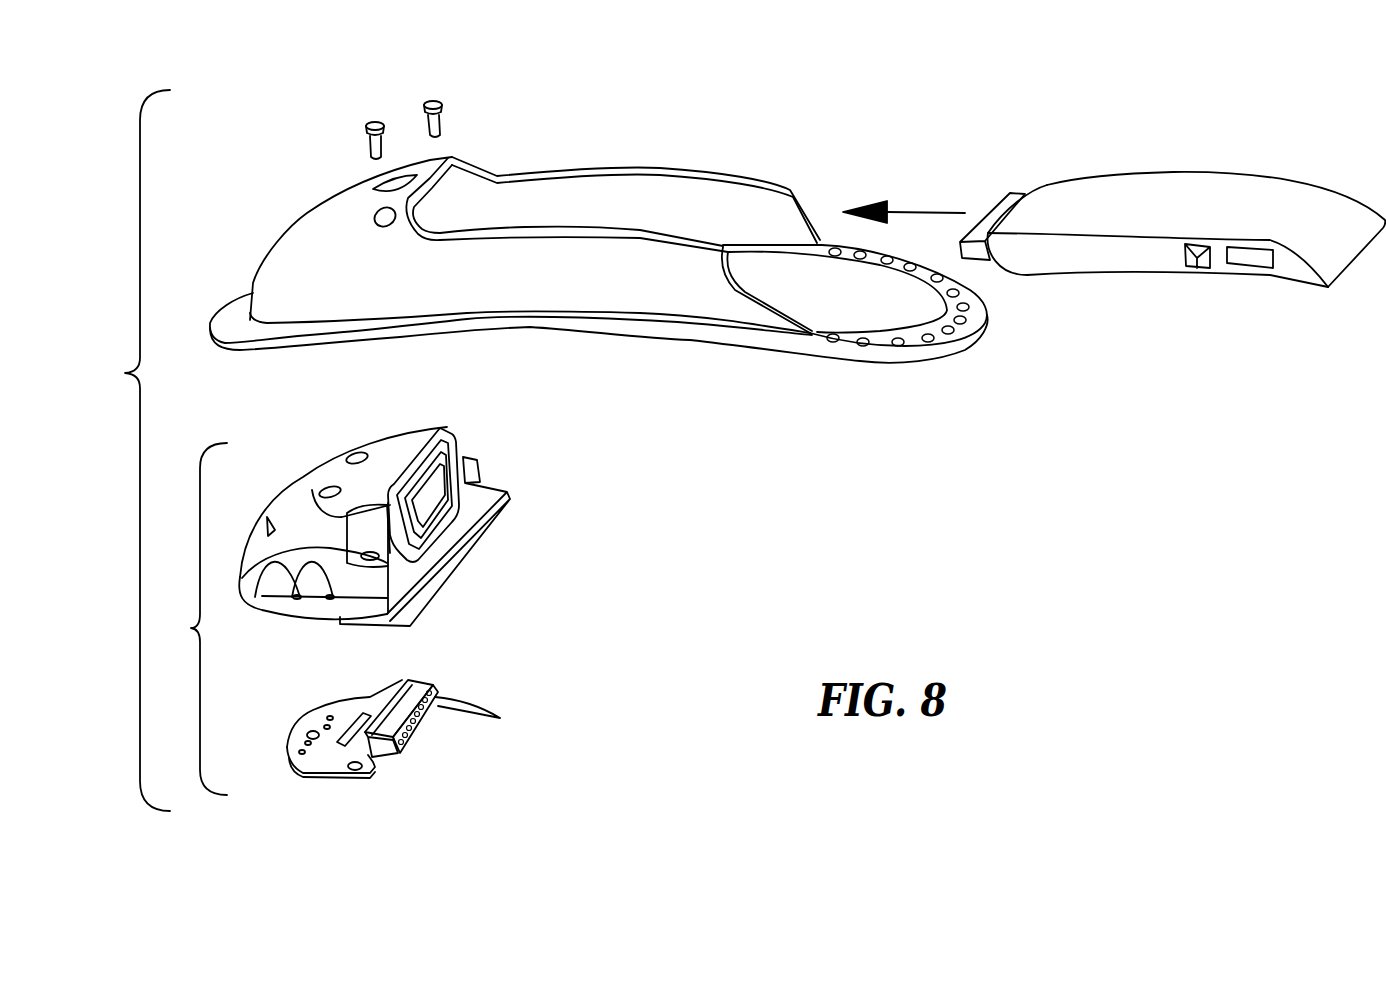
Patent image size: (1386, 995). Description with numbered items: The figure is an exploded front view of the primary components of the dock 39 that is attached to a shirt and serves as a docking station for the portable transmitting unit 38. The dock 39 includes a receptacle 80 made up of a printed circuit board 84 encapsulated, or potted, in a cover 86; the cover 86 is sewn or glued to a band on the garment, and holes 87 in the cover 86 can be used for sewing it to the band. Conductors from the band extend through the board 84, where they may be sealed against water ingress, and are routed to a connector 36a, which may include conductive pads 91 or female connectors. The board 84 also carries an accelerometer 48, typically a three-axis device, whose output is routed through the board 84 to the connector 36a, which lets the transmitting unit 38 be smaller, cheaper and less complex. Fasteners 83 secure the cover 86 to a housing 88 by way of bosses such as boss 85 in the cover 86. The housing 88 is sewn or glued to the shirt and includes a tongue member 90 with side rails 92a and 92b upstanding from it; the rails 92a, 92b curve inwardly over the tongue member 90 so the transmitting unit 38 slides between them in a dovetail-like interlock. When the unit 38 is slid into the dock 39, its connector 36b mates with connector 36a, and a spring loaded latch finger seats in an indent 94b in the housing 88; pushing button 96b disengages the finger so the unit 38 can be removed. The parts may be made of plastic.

The dock 39 is at (130, 450).
The receptacle 80 is at (187, 619).
The fasteners 83 is at (367, 145).
The printed circuit board 84 is at (367, 698).
The boss 85 is at (373, 553).
The cover 86 is at (367, 447).
The holes 87 is at (318, 560).
The housing 88 is at (297, 233).
The tongue member 90 is at (841, 311).
The conductive pads 91 is at (484, 716).
The side rail 92a is at (618, 187).
The side rail 92b is at (618, 267).
The connector 36a is at (420, 687).
The connector 36b is at (988, 208).
The portable transmitting unit 38 is at (1185, 188).
The indent 94b is at (1185, 262).
The button 96b is at (1248, 257).
The accelerometer 48 is at (343, 730).